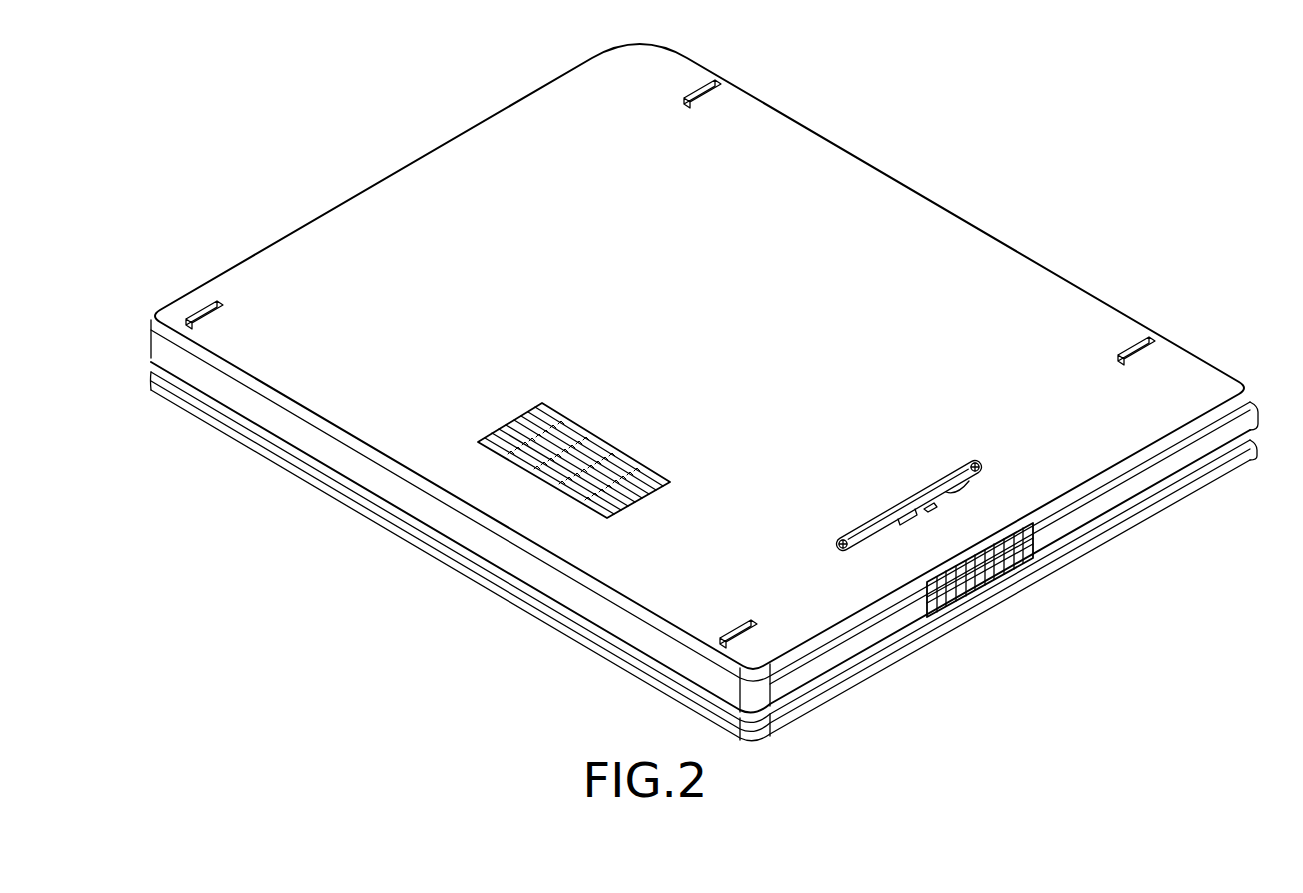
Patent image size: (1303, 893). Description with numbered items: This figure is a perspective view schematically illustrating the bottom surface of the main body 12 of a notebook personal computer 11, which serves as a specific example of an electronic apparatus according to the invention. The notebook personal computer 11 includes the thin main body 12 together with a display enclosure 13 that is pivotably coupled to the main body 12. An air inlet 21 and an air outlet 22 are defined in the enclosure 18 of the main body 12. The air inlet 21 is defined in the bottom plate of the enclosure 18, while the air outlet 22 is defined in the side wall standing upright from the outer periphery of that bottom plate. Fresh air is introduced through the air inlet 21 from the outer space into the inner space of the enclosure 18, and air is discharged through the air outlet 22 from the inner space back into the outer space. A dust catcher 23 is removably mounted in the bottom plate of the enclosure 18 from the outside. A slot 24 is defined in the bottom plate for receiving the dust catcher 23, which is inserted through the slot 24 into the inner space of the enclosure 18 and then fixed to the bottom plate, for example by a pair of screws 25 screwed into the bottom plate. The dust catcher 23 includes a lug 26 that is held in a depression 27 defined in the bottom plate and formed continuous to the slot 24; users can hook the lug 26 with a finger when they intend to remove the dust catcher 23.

The notebook personal computer 11 is at (705, 392).
The main body 12 is at (571, 607).
The display enclosure 13 is at (598, 667).
The enclosure 18 is at (1097, 304).
The air inlet 21 is at (556, 414).
The air outlet 22 is at (1034, 552).
The dust catcher 23 is at (907, 499).
The slot 24 is at (963, 483).
The screws 25 is at (984, 462).
The lug 26 is at (928, 507).
The depression 27 is at (898, 520).